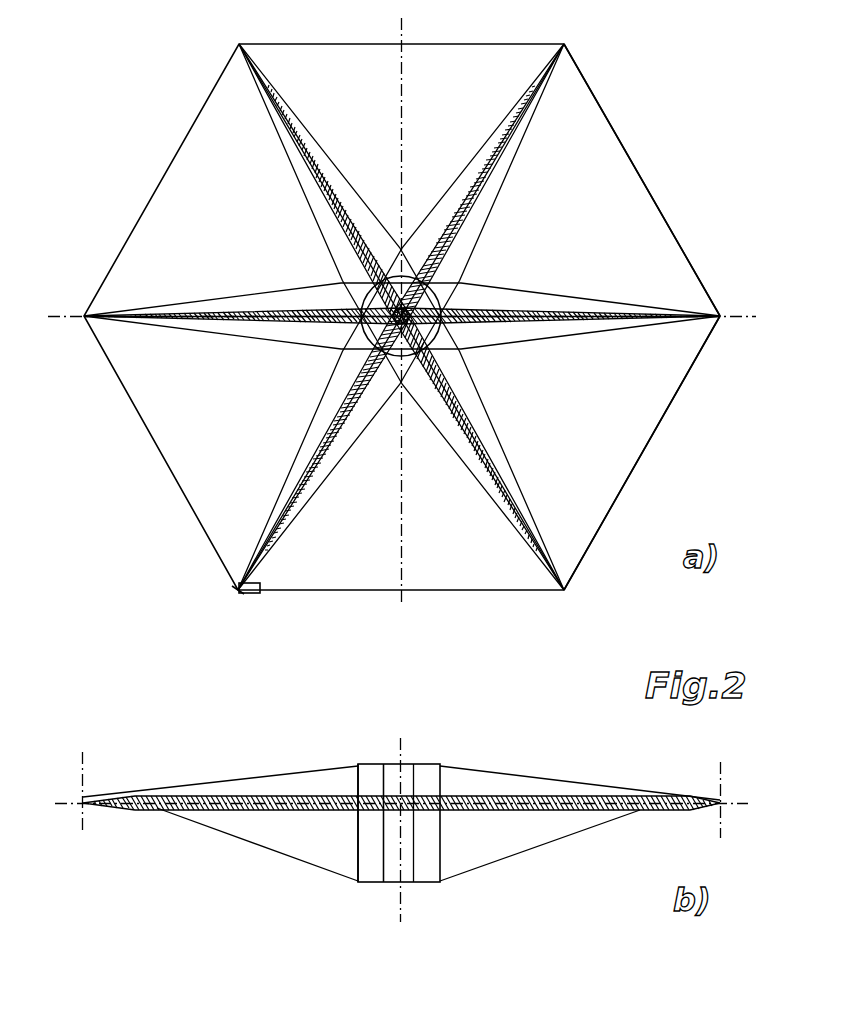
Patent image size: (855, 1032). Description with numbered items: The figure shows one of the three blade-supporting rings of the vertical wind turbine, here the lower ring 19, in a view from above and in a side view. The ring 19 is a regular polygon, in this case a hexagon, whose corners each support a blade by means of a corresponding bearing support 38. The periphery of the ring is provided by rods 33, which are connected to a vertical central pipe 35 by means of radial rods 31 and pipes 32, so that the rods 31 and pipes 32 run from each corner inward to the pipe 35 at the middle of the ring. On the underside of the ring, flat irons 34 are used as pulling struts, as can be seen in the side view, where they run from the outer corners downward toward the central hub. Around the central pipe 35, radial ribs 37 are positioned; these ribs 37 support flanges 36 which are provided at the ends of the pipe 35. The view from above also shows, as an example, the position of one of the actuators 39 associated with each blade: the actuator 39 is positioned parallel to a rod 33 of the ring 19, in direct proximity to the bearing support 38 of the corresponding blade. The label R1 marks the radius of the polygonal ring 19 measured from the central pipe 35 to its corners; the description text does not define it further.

The lower ring 19 is at (148, 146).
The radius of hexagonal rim R1 is at (654, 188).
The radial rod 31 is at (490, 212).
The pipe 32 is at (557, 316).
The rod 33 is at (648, 447).
The flat iron 34 is at (540, 846).
The central pipe 35 is at (395, 324).
The flange 36 is at (423, 764).
The radial rib 37 is at (358, 837).
The bearing support 38 is at (236, 592).
The actuator 39 is at (250, 594).